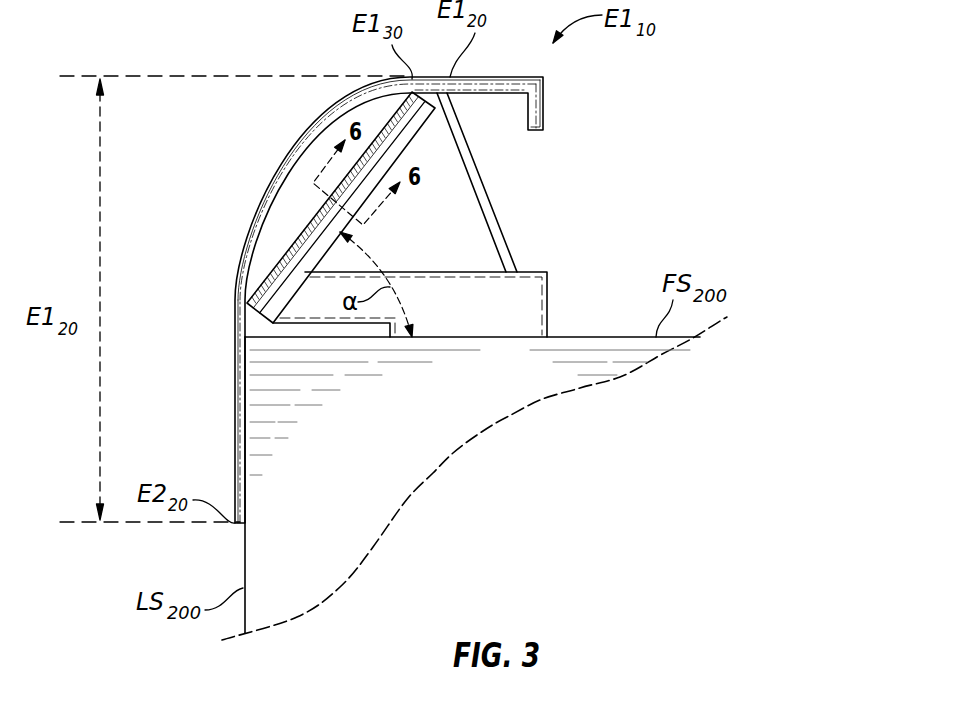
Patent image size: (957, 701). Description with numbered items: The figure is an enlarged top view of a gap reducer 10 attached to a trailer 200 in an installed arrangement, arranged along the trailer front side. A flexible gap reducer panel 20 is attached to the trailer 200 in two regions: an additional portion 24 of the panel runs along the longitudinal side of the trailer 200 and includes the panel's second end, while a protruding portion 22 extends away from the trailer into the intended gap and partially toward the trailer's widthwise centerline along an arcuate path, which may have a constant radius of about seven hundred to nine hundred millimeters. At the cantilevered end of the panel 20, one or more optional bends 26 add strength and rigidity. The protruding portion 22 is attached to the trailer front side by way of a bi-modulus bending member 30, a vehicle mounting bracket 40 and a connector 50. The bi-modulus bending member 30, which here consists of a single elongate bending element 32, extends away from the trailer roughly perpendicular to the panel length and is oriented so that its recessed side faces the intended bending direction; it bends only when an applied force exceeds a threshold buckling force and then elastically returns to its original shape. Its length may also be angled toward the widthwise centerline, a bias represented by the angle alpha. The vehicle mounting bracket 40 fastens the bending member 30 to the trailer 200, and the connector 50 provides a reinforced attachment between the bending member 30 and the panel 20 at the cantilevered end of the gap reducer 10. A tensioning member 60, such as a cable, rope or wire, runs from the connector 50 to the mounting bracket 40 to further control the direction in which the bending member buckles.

The gap reducer 10 is at (620, 180).
The gap reducer panel 20 is at (235, 317).
The protruding portion 22 is at (242, 248).
The additional portion 24 is at (237, 417).
The bends 26 is at (543, 80).
The bi-modulus bending member 30 is at (395, 115).
The elongate bending element 32 is at (295, 240).
The vehicle mounting bracket 40 is at (547, 293).
The connector 50 is at (480, 97).
The tensioning member 60 is at (513, 233).
The trailer 200 is at (408, 473).